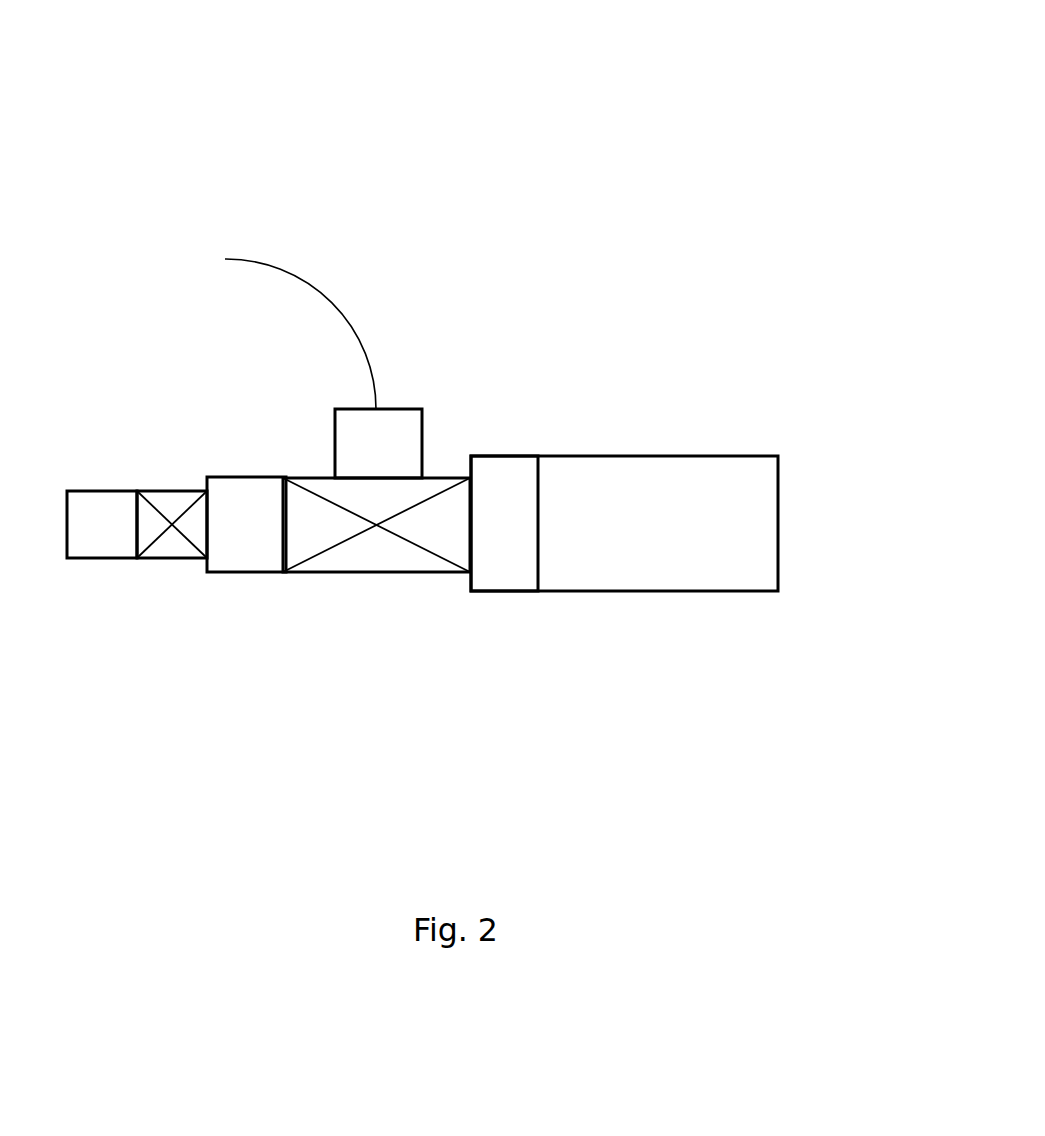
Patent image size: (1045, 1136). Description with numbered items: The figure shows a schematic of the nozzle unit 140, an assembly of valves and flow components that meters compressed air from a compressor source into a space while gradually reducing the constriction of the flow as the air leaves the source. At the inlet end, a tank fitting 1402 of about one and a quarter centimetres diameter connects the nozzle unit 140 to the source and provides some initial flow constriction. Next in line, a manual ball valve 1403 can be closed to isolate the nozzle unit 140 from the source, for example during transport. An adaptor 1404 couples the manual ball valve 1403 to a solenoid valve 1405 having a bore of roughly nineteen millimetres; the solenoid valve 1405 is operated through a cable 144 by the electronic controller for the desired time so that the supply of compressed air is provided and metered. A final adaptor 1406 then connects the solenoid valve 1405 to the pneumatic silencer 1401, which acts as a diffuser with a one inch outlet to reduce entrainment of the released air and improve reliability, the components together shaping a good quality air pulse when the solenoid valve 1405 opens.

The nozzle unit 140 is at (632, 148).
The cable 144 is at (312, 287).
The pneumatic silencer 1401 is at (639, 464).
The tank fitting 1402 is at (88, 488).
The manual ball valve 1403 is at (157, 487).
The adaptor 1404 is at (237, 563).
The solenoid valve 1405 is at (422, 415).
The final adaptor 1406 is at (515, 453).